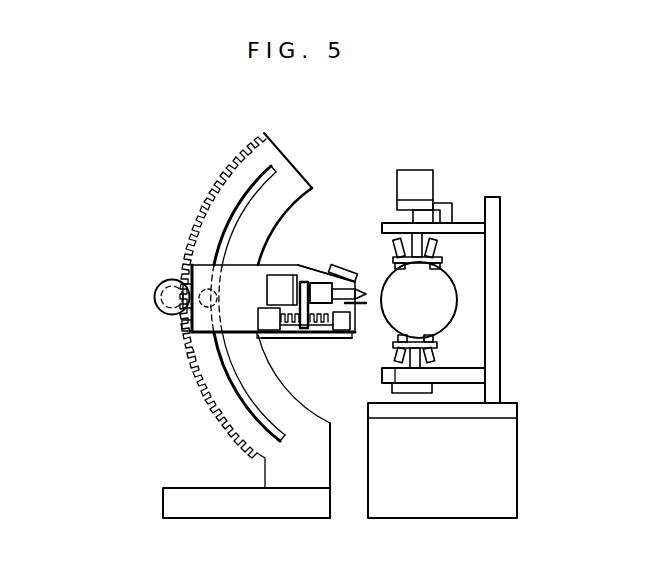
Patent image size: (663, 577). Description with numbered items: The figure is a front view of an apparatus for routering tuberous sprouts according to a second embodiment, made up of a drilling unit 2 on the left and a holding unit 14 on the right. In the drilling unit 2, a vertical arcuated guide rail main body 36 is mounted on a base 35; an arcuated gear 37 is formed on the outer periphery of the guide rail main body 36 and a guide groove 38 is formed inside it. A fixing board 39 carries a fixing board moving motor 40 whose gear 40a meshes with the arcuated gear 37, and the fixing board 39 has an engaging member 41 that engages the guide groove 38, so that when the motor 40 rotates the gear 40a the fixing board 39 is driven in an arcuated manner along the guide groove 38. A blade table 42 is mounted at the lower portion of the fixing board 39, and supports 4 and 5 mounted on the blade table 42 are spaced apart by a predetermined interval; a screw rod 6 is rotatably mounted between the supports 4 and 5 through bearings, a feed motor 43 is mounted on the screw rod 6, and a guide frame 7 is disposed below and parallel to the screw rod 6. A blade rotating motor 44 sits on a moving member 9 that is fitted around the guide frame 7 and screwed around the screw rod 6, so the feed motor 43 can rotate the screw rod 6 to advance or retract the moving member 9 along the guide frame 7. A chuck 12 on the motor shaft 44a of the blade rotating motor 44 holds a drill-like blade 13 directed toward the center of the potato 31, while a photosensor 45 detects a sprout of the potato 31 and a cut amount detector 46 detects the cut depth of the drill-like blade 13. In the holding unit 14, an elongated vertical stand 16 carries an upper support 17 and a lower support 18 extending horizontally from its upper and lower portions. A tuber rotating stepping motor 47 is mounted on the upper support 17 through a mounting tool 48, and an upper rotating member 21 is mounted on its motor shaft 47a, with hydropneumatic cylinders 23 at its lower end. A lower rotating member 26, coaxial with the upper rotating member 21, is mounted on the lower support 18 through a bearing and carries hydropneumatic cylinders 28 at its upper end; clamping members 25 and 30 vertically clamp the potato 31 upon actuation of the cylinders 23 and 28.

The drilling unit 2 is at (146, 240).
The support 4 is at (266, 331).
The support 5 is at (330, 340).
The screw rod 6 is at (310, 333).
The guide frame 7 is at (297, 338).
The moving member 9 is at (299, 284).
The chuck 12 is at (320, 283).
The drill-like blade 13 is at (332, 338).
The holding unit 14 is at (522, 328).
The stand 16 is at (500, 256).
The upper support 17 is at (470, 222).
The lower support 18 is at (480, 376).
The upper rotating member 21 is at (403, 236).
The hydropneumatic cylinders 23 is at (400, 254).
The clamping member 25 is at (395, 266).
The lower rotating member 26 is at (436, 357).
The hydropneumatic cylinders 28 is at (433, 340).
The clamping member 30 is at (420, 335).
The potato 31 is at (408, 353).
The base 35 is at (212, 518).
The guide rail main body 36 is at (320, 423).
The arcuated gear 37 is at (198, 210).
The guide groove 38 is at (276, 168).
The fixing board 39 is at (184, 331).
The fixing board moving motor 40 is at (155, 293).
The gear 40a is at (166, 306).
The engaging member 41 is at (200, 278).
The blade table 42 is at (274, 316).
The feed motor 43 is at (260, 318).
The blade rotating motor 44 is at (268, 282).
The motor shaft 44a is at (305, 264).
The photosensor 45 is at (343, 267).
The cut amount detector 46 is at (357, 304).
The tuber rotating stepping motor 47 is at (410, 172).
The motor shaft 47a is at (403, 215).
The mounting tool 48 is at (445, 204).